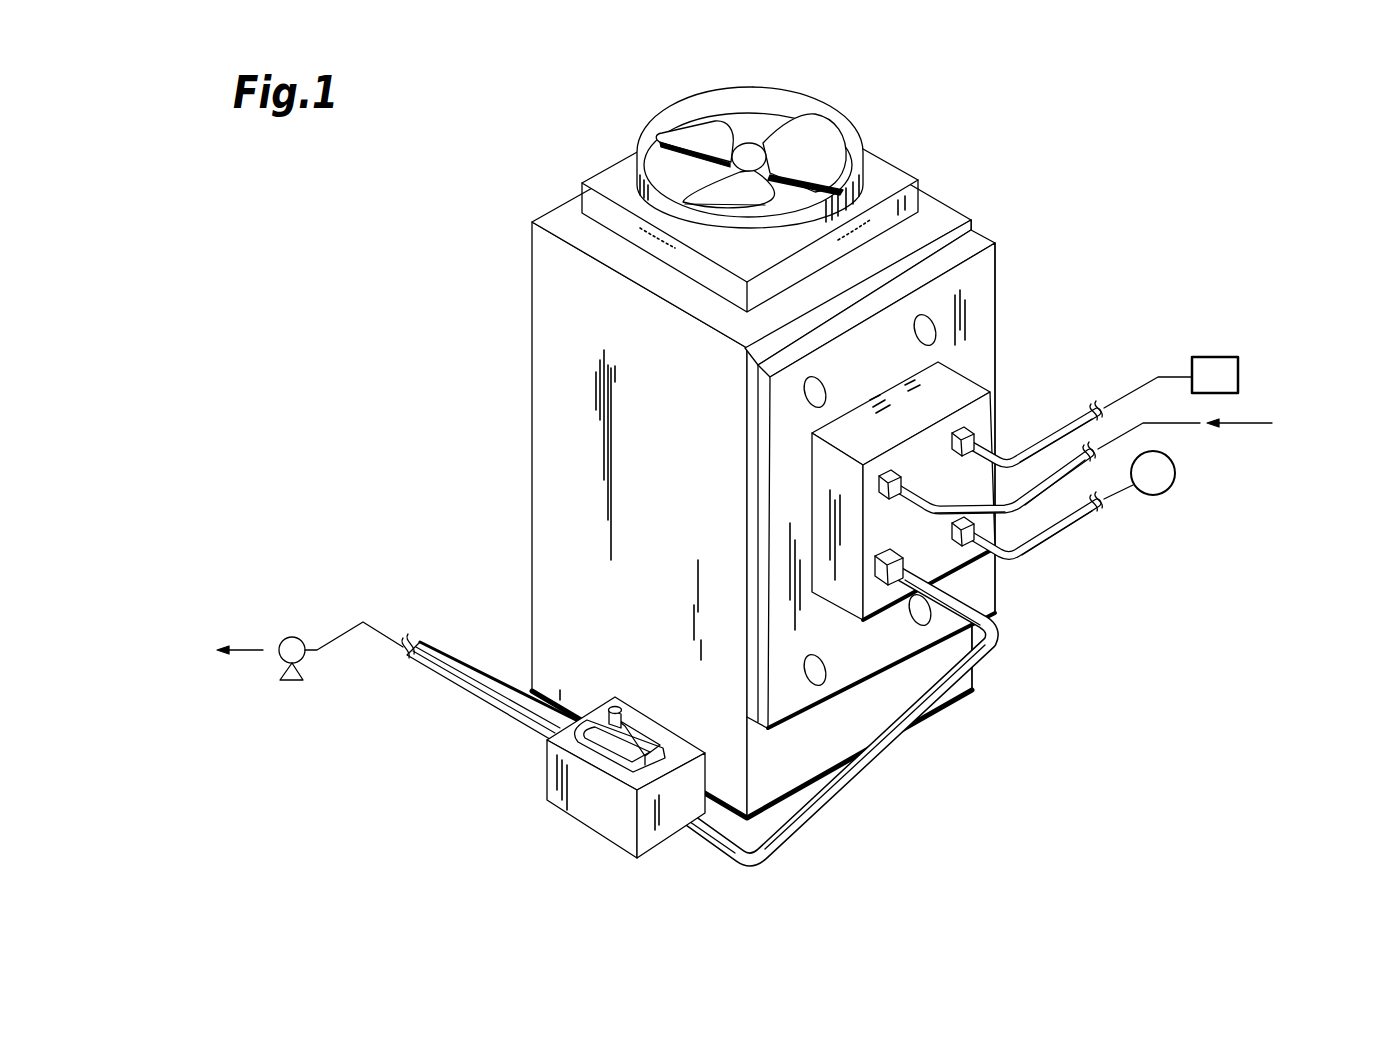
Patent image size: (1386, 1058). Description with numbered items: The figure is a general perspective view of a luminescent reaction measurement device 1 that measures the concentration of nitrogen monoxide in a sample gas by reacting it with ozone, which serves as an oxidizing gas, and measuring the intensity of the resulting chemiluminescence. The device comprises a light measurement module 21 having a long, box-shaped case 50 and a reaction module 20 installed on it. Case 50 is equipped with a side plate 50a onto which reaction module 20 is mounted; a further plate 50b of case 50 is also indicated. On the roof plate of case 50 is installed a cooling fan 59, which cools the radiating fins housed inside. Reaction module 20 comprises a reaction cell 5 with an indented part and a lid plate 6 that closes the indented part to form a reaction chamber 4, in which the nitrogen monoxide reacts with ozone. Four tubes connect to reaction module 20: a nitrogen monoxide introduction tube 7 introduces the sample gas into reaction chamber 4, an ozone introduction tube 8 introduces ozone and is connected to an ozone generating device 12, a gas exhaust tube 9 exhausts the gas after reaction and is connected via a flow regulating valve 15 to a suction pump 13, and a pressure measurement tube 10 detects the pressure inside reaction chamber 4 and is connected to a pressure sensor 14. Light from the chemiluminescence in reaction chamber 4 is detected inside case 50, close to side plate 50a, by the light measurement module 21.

The luminescent reaction measurement device 1 is at (736, 482).
The reaction chamber 4 is at (923, 543).
The reaction cell 5 is at (973, 231).
The lid plate 6 is at (968, 255).
The nitrogen monoxide introduction tube 7 is at (957, 503).
The ozone introduction tube 8 is at (1070, 430).
The gas exhaust tube 9 is at (950, 678).
The pressure measurement tube 10 is at (1063, 525).
The ozone generating device 12 is at (1218, 357).
The suction pump 13 is at (293, 682).
The pressure sensor 14 is at (1175, 482).
The flow regulating valve 15 is at (592, 802).
The reaction module 20 is at (944, 461).
The light measurement module 21 is at (817, 198).
The case 50 is at (764, 456).
The side plate 50a is at (973, 223).
The top plate 50b is at (942, 212).
The cooling fan 59 is at (850, 133).